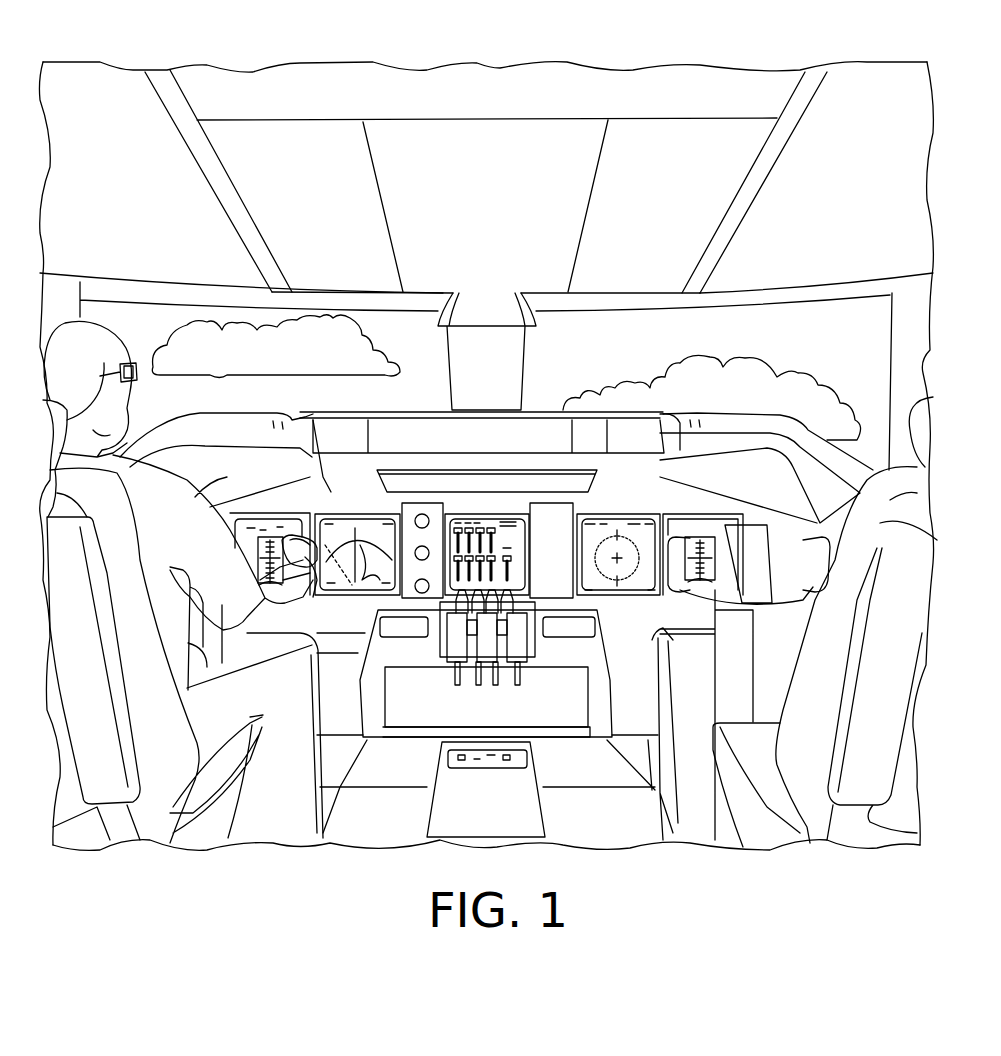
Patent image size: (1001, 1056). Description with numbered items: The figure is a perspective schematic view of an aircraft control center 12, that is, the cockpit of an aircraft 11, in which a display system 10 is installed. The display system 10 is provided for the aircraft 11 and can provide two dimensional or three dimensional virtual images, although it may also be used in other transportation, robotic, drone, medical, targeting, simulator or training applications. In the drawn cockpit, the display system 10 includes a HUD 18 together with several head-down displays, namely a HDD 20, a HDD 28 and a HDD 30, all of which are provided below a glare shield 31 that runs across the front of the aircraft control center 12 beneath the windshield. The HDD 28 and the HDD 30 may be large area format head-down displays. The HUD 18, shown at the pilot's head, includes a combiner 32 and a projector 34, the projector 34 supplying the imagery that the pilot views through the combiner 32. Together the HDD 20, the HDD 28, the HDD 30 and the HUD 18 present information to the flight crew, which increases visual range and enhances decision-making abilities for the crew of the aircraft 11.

The display system 10 is at (560, 370).
The aircraft 11 is at (637, 62).
The aircraft control center 12 is at (795, 213).
The HUD 18 is at (183, 533).
The HDD 20 is at (478, 515).
The HDD 28 is at (333, 515).
The HDD 30 is at (590, 515).
The glare shield 31 is at (333, 490).
The combiner 32 is at (137, 393).
The projector 34 is at (145, 360).